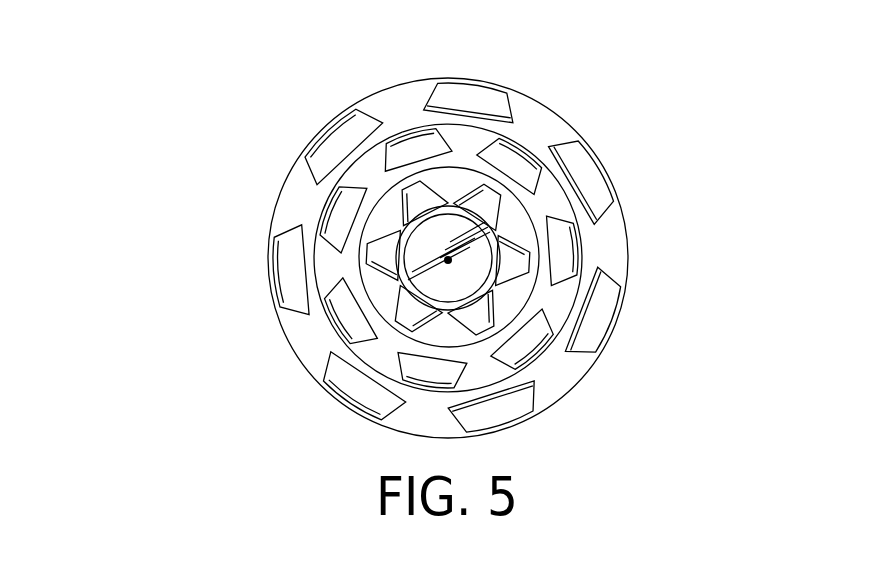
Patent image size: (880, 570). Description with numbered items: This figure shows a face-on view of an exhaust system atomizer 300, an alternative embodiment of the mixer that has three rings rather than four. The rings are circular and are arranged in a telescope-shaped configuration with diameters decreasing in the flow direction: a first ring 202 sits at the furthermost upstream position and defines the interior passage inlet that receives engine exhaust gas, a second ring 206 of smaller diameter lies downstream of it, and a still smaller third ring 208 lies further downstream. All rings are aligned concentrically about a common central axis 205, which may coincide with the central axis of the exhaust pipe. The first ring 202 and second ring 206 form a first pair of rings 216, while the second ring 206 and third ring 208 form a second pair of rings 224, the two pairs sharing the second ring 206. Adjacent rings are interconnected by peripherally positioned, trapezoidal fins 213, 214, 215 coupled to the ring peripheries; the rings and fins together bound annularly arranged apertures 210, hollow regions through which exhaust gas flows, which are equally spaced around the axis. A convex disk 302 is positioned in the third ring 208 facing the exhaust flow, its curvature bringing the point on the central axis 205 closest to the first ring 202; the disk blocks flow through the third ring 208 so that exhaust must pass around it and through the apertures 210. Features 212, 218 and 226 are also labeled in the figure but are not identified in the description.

The exhaust system atomizer 300 is at (668, 117).
The first ring 202 is at (532, 158).
The central axis 205 is at (447, 262).
The second ring 206 is at (518, 153).
The third ring 208 is at (445, 90).
The apertures 210 is at (314, 162).
The outer rim 212 is at (612, 184).
The fin 213 is at (568, 385).
The fin 214 is at (562, 188).
The fin 215 is at (535, 233).
The first pair of rings 216 is at (436, 145).
The inner boundary of outer ring 218 is at (428, 395).
The second pair of rings 224 is at (315, 196).
The inner ring 226 is at (540, 265).
The convex disk 302 is at (424, 226).